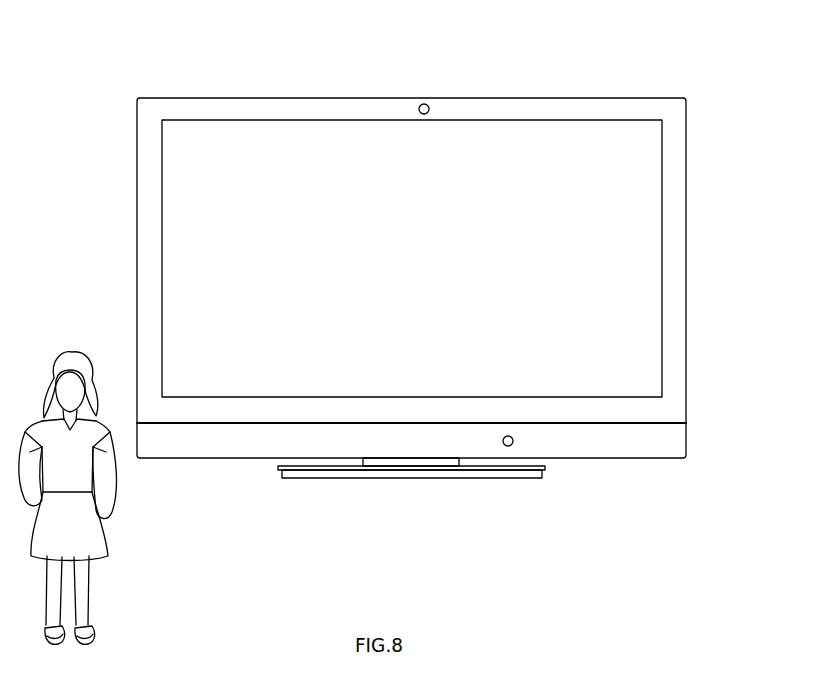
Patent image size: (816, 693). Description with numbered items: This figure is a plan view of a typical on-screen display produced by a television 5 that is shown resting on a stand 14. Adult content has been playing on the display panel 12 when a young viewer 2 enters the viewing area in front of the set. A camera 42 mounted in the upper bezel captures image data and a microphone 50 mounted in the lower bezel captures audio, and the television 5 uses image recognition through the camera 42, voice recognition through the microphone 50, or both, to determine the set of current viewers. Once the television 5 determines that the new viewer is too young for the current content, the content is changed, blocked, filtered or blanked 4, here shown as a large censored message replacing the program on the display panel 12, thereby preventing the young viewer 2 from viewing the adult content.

The young viewer 2 is at (90, 356).
The blanked content 4 is at (213, 143).
The television 5 is at (751, 213).
The display panel 12 is at (637, 284).
The stand 14 is at (537, 469).
The camera 42 is at (427, 104).
The microphone 50 is at (505, 446).